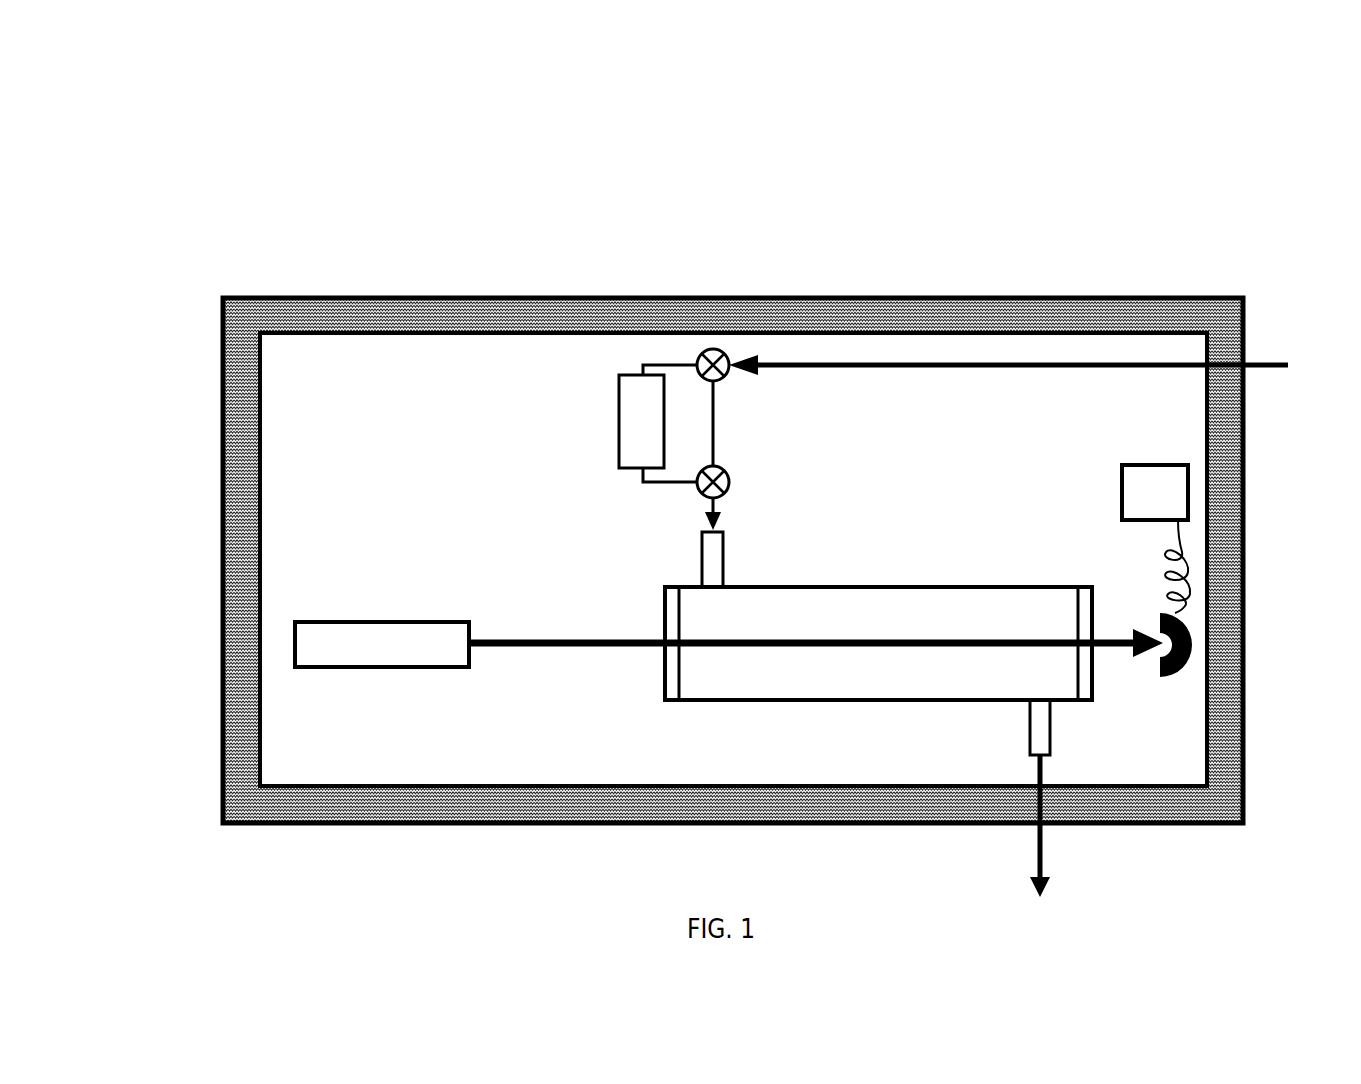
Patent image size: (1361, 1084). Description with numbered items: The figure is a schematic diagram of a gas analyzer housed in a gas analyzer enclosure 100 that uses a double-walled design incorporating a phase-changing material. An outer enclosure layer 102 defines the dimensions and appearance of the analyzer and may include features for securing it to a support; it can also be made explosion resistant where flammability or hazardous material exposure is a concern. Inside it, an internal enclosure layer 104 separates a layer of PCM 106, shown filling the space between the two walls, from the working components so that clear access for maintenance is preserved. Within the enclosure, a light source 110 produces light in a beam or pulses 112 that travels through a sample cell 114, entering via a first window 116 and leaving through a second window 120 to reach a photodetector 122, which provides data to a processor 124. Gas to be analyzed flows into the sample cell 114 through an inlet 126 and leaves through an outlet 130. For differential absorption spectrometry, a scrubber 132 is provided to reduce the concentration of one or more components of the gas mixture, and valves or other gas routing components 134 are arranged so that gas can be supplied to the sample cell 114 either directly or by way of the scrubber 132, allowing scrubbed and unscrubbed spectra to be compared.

The gas analyzer enclosure 100 is at (253, 162).
The outer enclosure layer 102 is at (945, 298).
The internal enclosure layer 104 is at (402, 337).
The layer of PCM 106 is at (492, 320).
The light source 110 is at (343, 638).
The beam or pulses 112 is at (558, 650).
The sample cell 114 is at (845, 678).
The first window 116 is at (673, 683).
The second window 120 is at (1087, 598).
The photodetector 122 is at (1162, 677).
The processor 124 is at (1135, 488).
The inlet 126 is at (725, 557).
The outlet 130 is at (1040, 738).
The scrubber 132 is at (635, 428).
The valves or gas routing components 134 is at (722, 378).